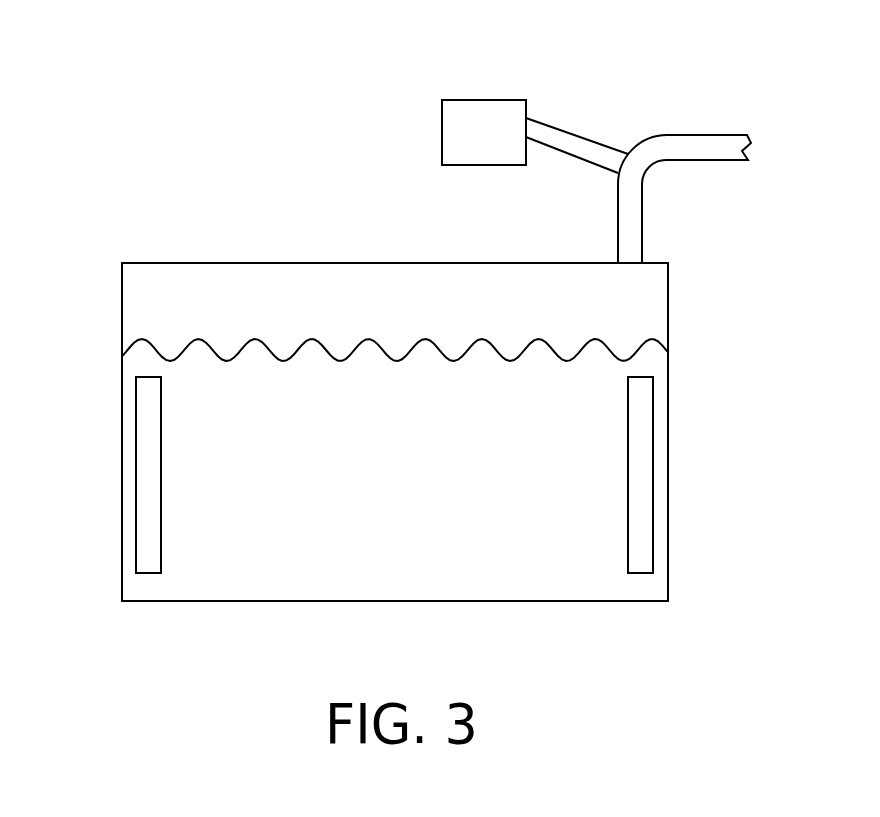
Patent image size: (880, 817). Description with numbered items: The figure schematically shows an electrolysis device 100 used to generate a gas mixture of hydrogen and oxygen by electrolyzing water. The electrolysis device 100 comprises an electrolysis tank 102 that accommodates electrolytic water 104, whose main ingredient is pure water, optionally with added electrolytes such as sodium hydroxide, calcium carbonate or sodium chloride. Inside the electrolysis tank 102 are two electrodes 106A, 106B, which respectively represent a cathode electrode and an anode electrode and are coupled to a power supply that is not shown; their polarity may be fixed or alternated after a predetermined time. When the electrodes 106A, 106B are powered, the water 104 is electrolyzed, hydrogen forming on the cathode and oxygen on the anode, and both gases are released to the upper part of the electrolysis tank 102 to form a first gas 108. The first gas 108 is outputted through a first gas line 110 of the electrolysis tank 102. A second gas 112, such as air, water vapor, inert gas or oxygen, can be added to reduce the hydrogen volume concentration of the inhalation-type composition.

The electrolysis device 100 is at (140, 54).
The electrolysis tank 102 is at (172, 263).
The electrolytic water 104 is at (453, 582).
The electrode 106A is at (147, 399).
The electrode 106B is at (645, 395).
The first gas 108 is at (300, 303).
The first gas line 110 is at (635, 212).
The second gas 112 is at (498, 121).